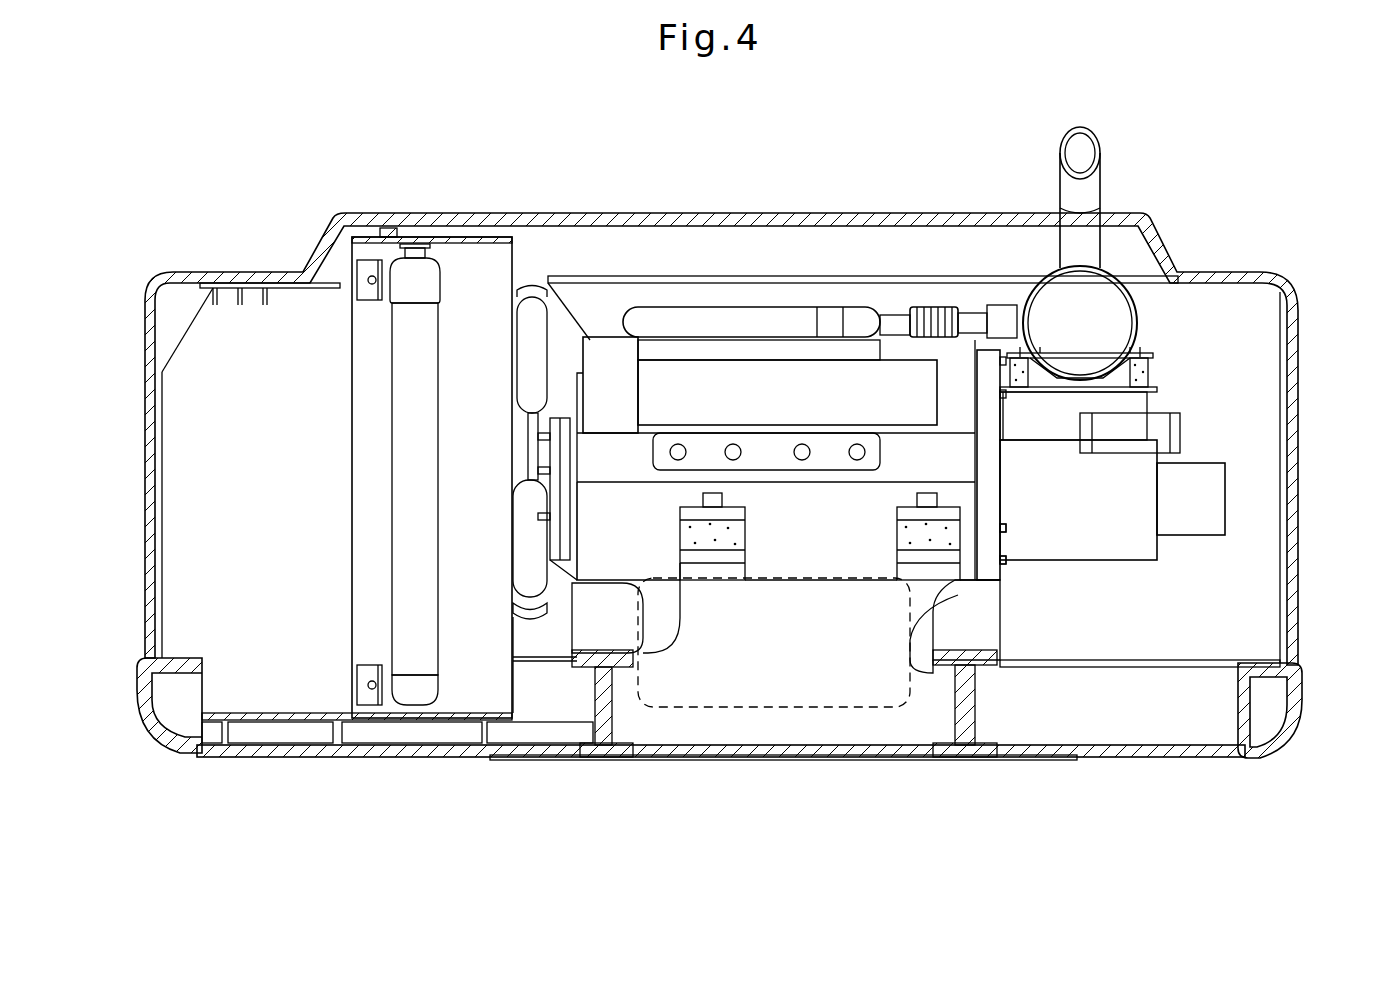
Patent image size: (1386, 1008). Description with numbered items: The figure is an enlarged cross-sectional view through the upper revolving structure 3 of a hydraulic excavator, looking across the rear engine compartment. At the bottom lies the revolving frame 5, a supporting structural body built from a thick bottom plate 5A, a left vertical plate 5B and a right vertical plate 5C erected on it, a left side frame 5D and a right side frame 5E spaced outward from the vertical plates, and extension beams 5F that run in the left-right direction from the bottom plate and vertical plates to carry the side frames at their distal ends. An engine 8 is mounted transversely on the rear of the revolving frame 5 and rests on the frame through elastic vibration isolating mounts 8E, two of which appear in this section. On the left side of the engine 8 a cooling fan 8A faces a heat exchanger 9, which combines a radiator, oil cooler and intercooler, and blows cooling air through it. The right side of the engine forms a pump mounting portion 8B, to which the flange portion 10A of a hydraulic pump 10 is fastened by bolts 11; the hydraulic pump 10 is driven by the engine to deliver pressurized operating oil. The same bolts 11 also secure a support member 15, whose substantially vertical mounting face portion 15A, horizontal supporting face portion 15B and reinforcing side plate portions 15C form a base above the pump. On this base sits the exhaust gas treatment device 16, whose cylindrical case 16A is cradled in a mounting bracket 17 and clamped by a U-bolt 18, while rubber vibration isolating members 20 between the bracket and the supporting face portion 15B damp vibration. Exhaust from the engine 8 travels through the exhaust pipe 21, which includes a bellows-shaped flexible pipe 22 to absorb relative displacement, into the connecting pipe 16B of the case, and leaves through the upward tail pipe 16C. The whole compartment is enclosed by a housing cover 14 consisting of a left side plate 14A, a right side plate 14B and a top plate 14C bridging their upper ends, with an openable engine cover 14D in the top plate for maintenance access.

The upper revolving structure 3 is at (677, 200).
The revolving frame 5 is at (725, 757).
The bottom plate 5A is at (768, 757).
The left vertical plate 5B is at (628, 737).
The right vertical plate 5C is at (965, 735).
The left side frame 5D is at (150, 758).
The right side frame 5E is at (1283, 733).
The extension beam 5F is at (262, 735).
The engine 8 is at (782, 318).
The cooling fan 8A is at (530, 318).
The pump mounting portion 8B is at (982, 542).
The vibration isolating mount 8E is at (707, 552).
The heat exchanger 9 is at (415, 278).
The hydraulic pump 10 is at (1140, 512).
The flange portion 10A is at (1013, 562).
The bolt 11 is at (1020, 525).
The housing cover 14 is at (601, 214).
The left side plate 14A is at (147, 522).
The right side plate 14B is at (1292, 563).
The top plate 14C is at (306, 272).
The engine cover 14D is at (722, 222).
The support member 15 is at (1045, 400).
The mounting face portion 15A is at (1010, 428).
The supporting face portion 15B is at (1150, 356).
The side plate portion 15C is at (1047, 423).
The exhaust gas treatment device 16 is at (1100, 300).
The cylindrical case 16A is at (1060, 305).
The connecting pipe 16B is at (995, 320).
The tail pipe 16C is at (1078, 160).
The mounting bracket 17 is at (1047, 427).
The U-bolt 18 is at (1040, 405).
The vibration isolating member 20 is at (1010, 360).
The exhaust pipe 21 is at (877, 315).
The flexible pipe 22 is at (917, 330).